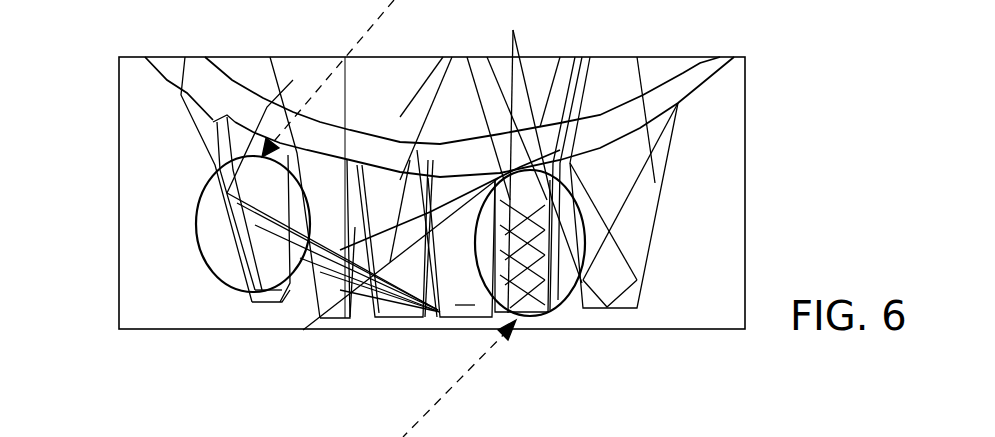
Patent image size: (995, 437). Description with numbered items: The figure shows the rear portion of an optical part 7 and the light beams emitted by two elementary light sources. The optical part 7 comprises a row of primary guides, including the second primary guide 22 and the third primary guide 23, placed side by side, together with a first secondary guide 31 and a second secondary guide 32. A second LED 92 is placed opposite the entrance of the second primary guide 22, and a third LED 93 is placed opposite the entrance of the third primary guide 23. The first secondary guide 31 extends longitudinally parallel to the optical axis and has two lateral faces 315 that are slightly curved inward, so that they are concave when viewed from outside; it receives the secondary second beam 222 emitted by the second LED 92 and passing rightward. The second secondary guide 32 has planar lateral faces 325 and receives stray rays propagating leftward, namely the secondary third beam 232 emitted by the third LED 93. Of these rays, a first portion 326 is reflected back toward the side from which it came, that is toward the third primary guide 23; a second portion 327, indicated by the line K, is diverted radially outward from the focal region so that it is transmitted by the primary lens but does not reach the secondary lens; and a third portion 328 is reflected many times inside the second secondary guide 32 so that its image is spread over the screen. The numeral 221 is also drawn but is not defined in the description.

The optical part 7 is at (780, 86).
The line K is at (187, 115).
The second portion of rays 327 is at (197, 138).
The third portion of rays 328 is at (218, 166).
The planar lateral faces 325 is at (243, 235).
The second secondary guide 32 is at (268, 245).
The first portion of rays 326 is at (268, 305).
The rod 221 is at (303, 330).
The second primary guide 22 is at (380, 308).
The second LED 92 is at (400, 312).
The secondary third beam 232 is at (427, 317).
The secondary second beam 222 is at (478, 316).
The third LED 93 is at (455, 305).
The lateral faces 315 is at (537, 158).
The first secondary guide 31 is at (547, 273).
The third primary guide 23 is at (513, 320).